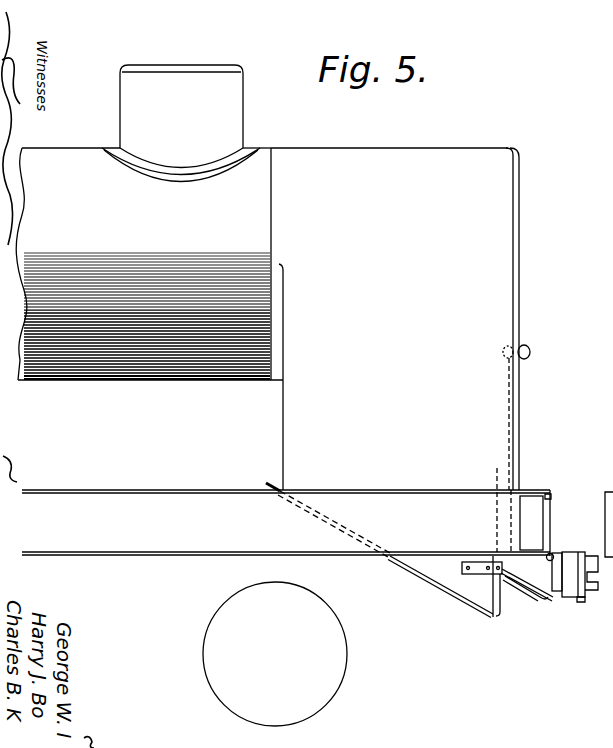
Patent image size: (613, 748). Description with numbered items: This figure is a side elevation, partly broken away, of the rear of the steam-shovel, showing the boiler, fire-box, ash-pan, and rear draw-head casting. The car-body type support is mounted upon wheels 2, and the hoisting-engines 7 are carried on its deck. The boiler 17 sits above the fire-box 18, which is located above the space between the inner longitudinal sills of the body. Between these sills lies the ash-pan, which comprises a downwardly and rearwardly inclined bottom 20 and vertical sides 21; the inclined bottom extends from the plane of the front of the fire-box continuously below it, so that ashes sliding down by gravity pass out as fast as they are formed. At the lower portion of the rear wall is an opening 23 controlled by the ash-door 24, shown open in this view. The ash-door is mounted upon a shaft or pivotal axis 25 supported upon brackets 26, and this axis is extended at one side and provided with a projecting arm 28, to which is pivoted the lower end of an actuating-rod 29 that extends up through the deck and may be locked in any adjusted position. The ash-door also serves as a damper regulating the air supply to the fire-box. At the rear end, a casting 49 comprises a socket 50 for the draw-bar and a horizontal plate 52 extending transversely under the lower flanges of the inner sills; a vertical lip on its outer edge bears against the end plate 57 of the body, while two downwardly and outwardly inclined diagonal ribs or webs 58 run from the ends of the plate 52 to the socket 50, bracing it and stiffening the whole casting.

The wheels 2 is at (205, 641).
The hoisting-engines 7 is at (148, 492).
The boiler 17 is at (166, 381).
The fire-box 18 is at (283, 419).
The inclined bottom 20 is at (472, 600).
The vertical sides 21 is at (437, 568).
The opening 23 is at (496, 606).
The ash-door 24 is at (528, 597).
The shaft or pivotal axis 25 is at (498, 571).
The brackets 26 is at (483, 564).
The projecting arm 28 is at (512, 549).
The actuating-rod 29 is at (522, 474).
The casting 49 is at (570, 545).
The socket 50 is at (538, 551).
The horizontal plate 52 is at (531, 553).
The end plate 57 is at (550, 496).
The inclined diagonal ribs or webs 58 is at (556, 560).